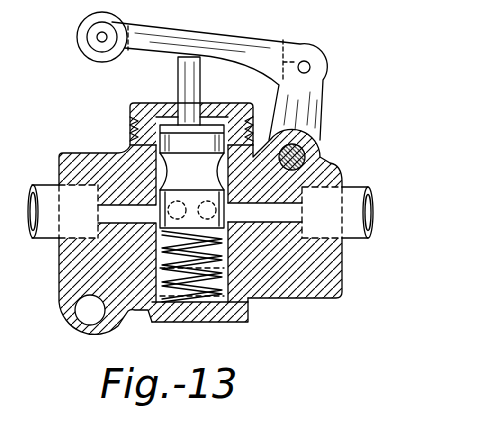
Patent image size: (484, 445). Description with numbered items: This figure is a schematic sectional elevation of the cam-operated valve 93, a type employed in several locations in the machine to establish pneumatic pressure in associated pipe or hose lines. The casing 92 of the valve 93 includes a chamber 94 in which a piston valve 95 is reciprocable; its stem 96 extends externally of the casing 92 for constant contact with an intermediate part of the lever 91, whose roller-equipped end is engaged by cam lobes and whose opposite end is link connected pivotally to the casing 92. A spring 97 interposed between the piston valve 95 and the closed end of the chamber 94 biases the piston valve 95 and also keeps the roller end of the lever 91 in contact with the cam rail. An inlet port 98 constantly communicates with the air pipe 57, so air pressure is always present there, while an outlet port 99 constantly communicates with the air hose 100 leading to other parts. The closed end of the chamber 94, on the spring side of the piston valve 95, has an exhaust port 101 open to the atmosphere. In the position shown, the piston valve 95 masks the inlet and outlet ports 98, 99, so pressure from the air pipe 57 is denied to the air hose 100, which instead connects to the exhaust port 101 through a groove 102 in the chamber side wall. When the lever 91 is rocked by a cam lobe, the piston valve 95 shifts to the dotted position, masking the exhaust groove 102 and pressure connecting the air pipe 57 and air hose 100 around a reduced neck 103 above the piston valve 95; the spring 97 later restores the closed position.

The lever 91 is at (209, 30).
The casing 92 is at (331, 163).
The valve 93 is at (294, 299).
The chamber 94 is at (131, 311).
The piston valve 95 is at (185, 208).
The stem 96 is at (178, 78).
The spring 97 is at (229, 297).
The inlet port 98 is at (157, 208).
The outlet port 99 is at (231, 212).
The air hose 100 is at (353, 187).
The exhaust port 101 is at (215, 310).
The groove 102 is at (229, 250).
The reduced neck 103 is at (281, 168).
The air pipe 57 is at (46, 240).